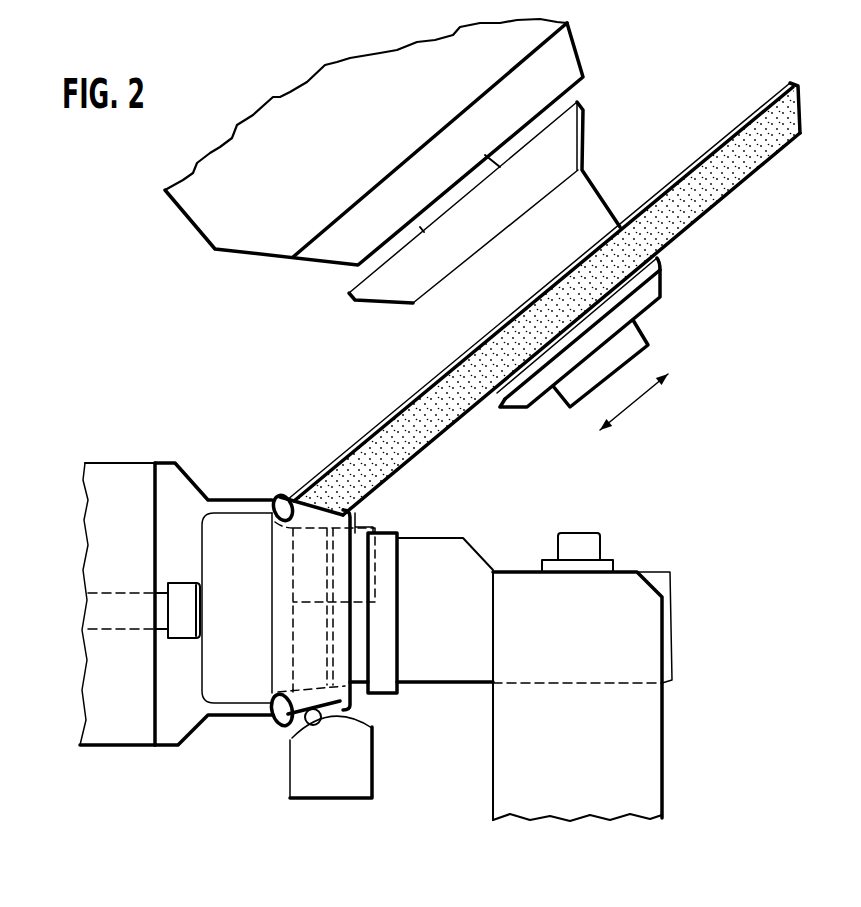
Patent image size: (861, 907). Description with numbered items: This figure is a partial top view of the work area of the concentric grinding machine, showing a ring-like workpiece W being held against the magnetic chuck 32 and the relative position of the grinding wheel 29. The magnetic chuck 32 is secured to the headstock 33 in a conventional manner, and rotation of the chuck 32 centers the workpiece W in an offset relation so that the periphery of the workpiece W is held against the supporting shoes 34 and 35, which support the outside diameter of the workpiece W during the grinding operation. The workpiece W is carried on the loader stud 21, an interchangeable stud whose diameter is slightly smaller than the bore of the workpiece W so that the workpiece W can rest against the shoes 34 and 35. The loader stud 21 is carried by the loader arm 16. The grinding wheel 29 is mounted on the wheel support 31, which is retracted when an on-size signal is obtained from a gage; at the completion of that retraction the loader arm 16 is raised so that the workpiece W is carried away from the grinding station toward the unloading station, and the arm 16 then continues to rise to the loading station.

The loader arm 16 is at (635, 782).
The loader stud 21 is at (440, 552).
The grinding wheel 29 is at (397, 433).
The wheel support 31 is at (267, 230).
The magnetic chuck 32 is at (188, 713).
The headstock 33 is at (115, 730).
The supporting shoe 34 is at (360, 523).
The supporting shoe 35 is at (353, 773).
The workpiece W is at (277, 718).